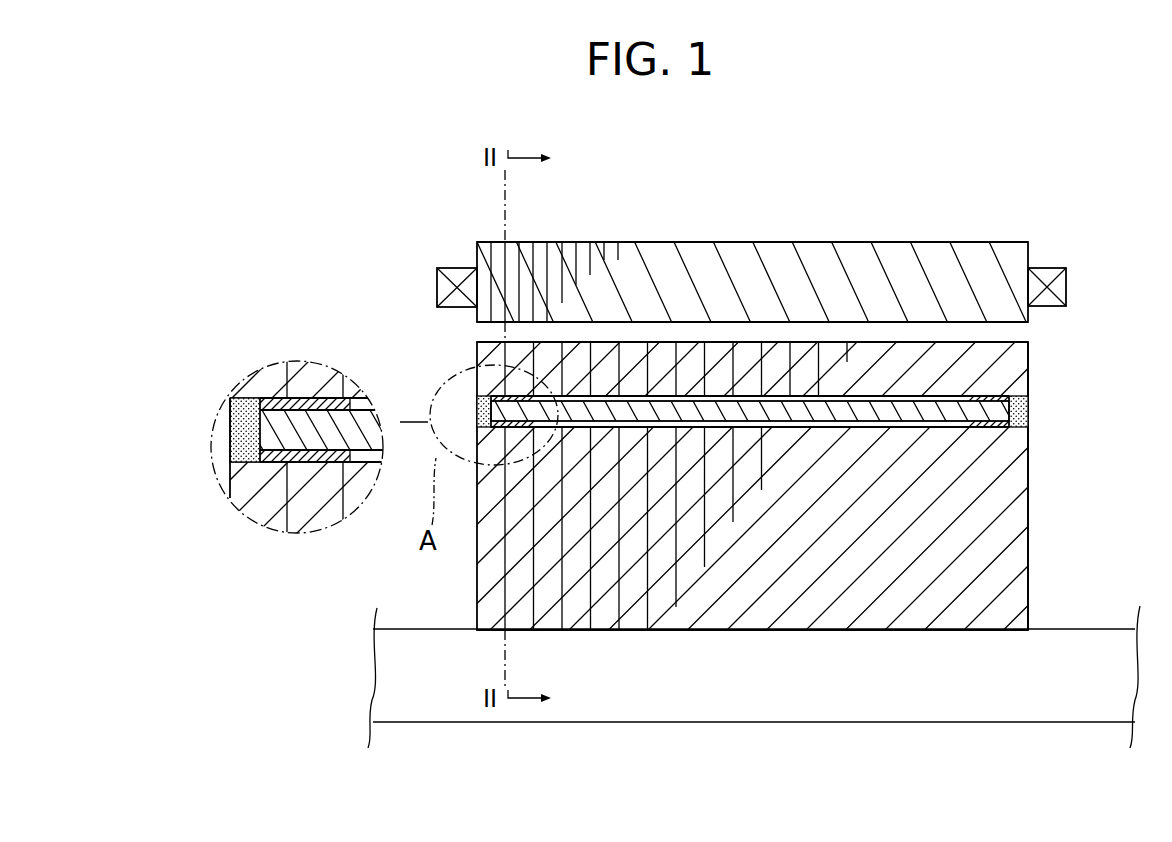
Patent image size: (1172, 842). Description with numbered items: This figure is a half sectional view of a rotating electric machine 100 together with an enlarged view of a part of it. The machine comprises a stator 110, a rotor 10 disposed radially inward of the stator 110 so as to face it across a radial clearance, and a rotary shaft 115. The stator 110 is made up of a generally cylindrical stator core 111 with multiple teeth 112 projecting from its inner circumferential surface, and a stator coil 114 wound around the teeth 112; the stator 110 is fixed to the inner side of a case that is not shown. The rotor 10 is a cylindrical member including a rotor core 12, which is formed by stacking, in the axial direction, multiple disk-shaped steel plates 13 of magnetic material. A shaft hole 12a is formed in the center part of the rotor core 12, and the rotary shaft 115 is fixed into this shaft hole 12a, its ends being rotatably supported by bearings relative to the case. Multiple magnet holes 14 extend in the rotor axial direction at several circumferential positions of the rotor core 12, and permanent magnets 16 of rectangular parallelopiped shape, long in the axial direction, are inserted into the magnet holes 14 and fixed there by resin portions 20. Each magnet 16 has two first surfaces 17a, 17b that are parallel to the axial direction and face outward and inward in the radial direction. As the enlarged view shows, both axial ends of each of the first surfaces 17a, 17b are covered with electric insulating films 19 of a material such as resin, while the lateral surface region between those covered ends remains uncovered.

The rotating electric machine 100 is at (762, 259).
The stator 110 is at (879, 236).
The stator core 111 is at (745, 242).
The teeth 112 is at (475, 318).
The stator coil 114 is at (1050, 268).
The rotary shaft 115 is at (933, 680).
The rotor 10 is at (1036, 461).
The rotor core 12 is at (955, 535).
The shaft hole 12a is at (829, 630).
The steel plates 13 is at (575, 342).
The magnet holes 14 is at (888, 426).
The magnets 16 is at (925, 408).
The first surface 17a is at (776, 396).
The first surface 17b is at (743, 427).
The electric insulating films 19 is at (996, 399).
The resin portions 20 is at (1020, 412).